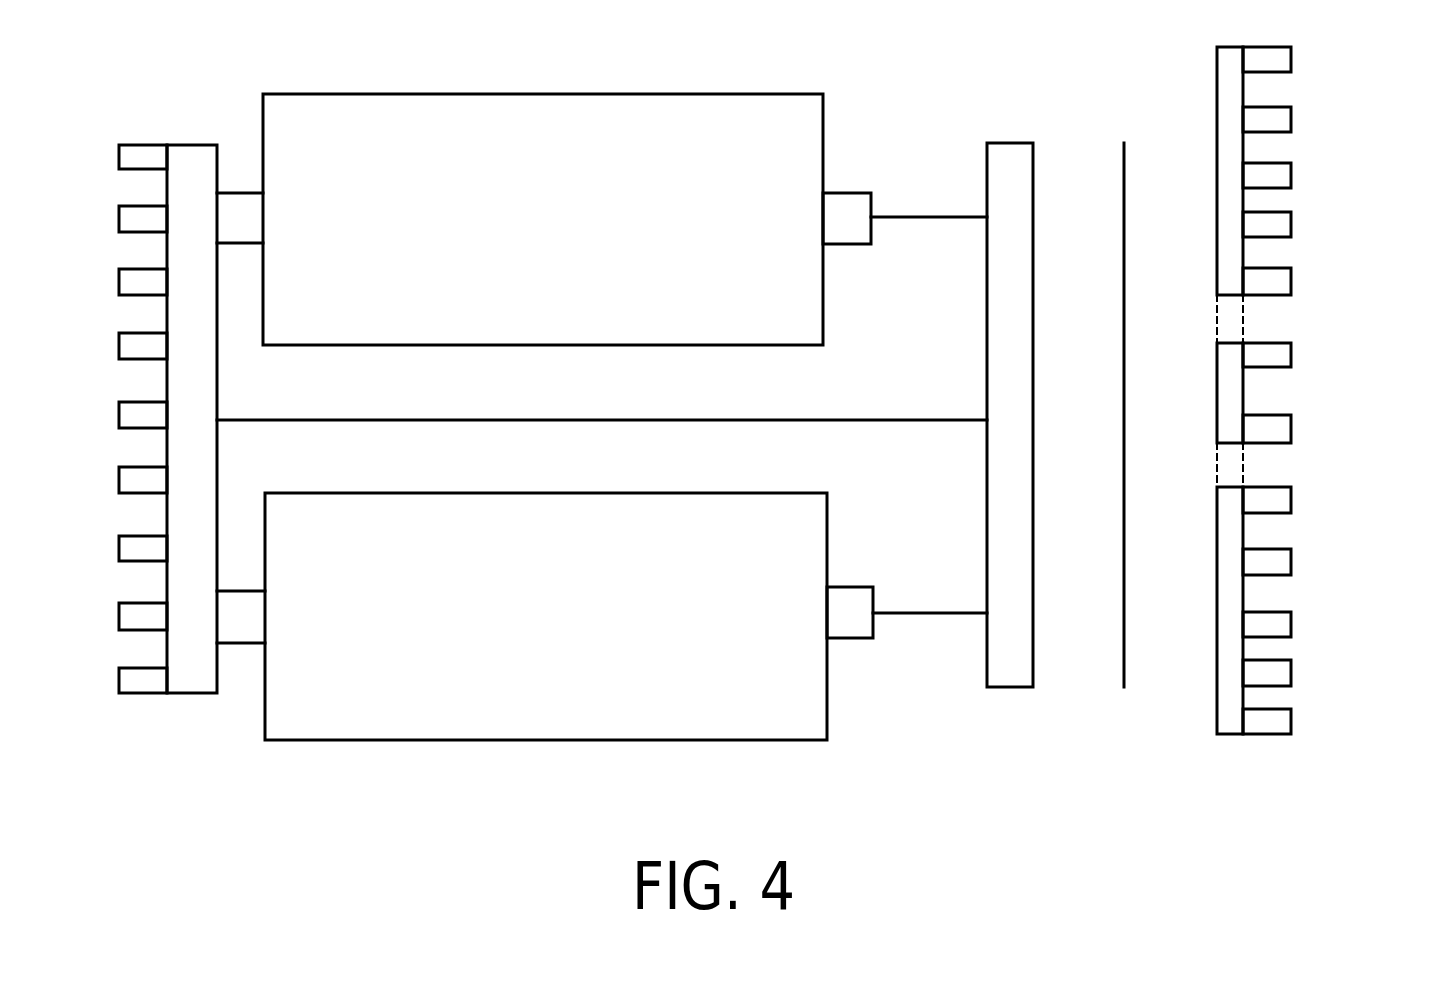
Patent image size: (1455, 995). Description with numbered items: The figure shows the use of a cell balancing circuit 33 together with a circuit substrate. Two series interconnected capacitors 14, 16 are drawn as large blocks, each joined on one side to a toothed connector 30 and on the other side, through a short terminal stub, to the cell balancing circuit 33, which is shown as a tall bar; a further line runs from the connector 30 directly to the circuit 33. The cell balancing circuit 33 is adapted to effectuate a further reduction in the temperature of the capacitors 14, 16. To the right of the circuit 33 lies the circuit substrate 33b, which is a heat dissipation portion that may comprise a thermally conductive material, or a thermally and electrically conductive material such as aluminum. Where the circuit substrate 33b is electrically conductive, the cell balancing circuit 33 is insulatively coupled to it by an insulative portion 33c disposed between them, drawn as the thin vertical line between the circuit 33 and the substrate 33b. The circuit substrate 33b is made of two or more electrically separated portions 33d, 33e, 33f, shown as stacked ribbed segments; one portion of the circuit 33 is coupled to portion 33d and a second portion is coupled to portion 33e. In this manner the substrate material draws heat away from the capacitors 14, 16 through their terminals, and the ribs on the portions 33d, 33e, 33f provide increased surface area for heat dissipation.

The capacitor 14 is at (408, 742).
The capacitor 16 is at (620, 95).
The connector 30 is at (192, 693).
The cell balancing circuit 33 is at (1008, 143).
The circuit substrate 33b is at (1176, 752).
The insulative portion 33c is at (1124, 241).
The electrically separated portion 33d is at (1290, 125).
The electrically separated portion 33e is at (1293, 557).
The electrically separated portion 33f is at (1293, 344).